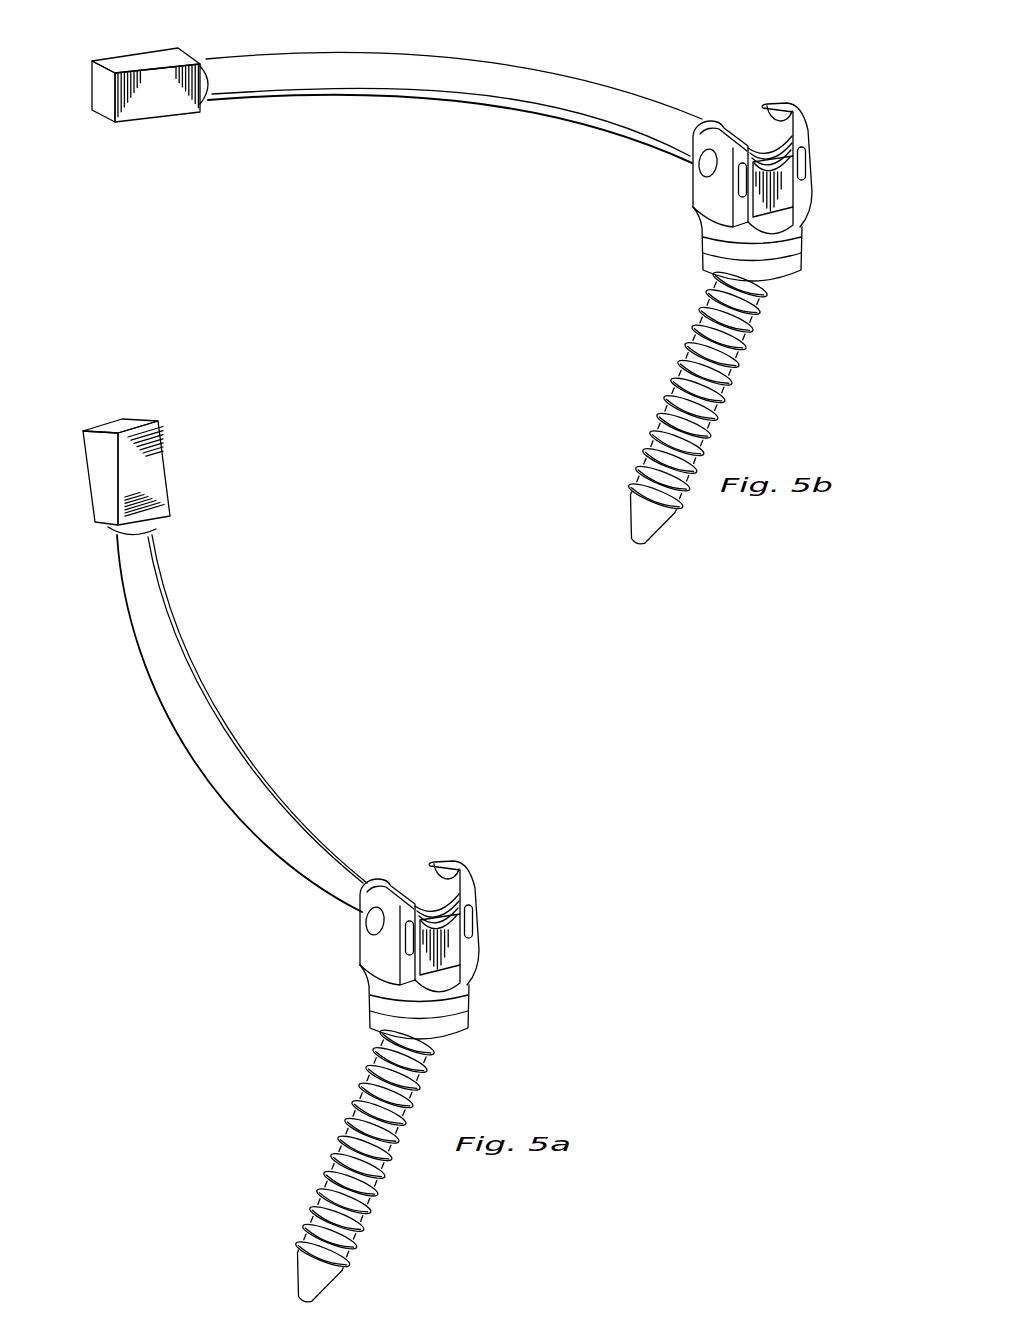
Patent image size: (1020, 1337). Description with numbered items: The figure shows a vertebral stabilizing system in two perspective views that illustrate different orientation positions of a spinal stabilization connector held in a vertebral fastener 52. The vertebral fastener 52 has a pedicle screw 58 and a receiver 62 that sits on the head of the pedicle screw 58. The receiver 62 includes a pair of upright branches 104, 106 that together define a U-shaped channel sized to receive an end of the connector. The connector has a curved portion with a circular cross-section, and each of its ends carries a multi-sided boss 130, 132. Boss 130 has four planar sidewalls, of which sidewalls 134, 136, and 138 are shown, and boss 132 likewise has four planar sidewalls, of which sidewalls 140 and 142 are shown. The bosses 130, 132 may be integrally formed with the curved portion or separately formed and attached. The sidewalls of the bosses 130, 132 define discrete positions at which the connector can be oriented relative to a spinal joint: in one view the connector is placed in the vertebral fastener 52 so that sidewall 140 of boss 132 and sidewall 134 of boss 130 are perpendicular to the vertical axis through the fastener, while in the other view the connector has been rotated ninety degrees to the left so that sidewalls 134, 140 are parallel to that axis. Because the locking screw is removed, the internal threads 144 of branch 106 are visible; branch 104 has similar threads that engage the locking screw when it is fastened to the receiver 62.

In FIG. 5A, the vertebral fastener 52 is at (538, 885).
In FIG. 5B, the vertebral fastener 52 is at (843, 108).
In FIG. 5A, the pedicle screw 58 is at (378, 1190).
In FIG. 5B, the pedicle screw 58 is at (728, 394).
In FIG. 5A, the receiver 62 is at (363, 973).
In FIG. 5B, the receiver 62 is at (695, 222).
In FIG. 5A, the upright branch 104 is at (363, 958).
In FIG. 5B, the upright branch 104 is at (697, 208).
In FIG. 5A, the upright branch 106 is at (488, 923).
In FIG. 5B, the upright branch 106 is at (805, 195).
In FIG. 5A, the multi-sided boss 130 is at (172, 498).
In FIG. 5A, the multi-sided boss 132 is at (463, 922).
In FIG. 5A, the sidewall 134 is at (155, 482).
In FIG. 5B, the sidewall 134 is at (165, 100).
In FIG. 5A, the sidewall 136 is at (102, 473).
In FIG. 5B, the sidewall 138 is at (148, 62).
In FIG. 5A, the sidewall 140 is at (463, 908).
In FIG. 5B, the sidewall 142 is at (755, 136).
In FIG. 5A, the internal threads 144 is at (423, 895).